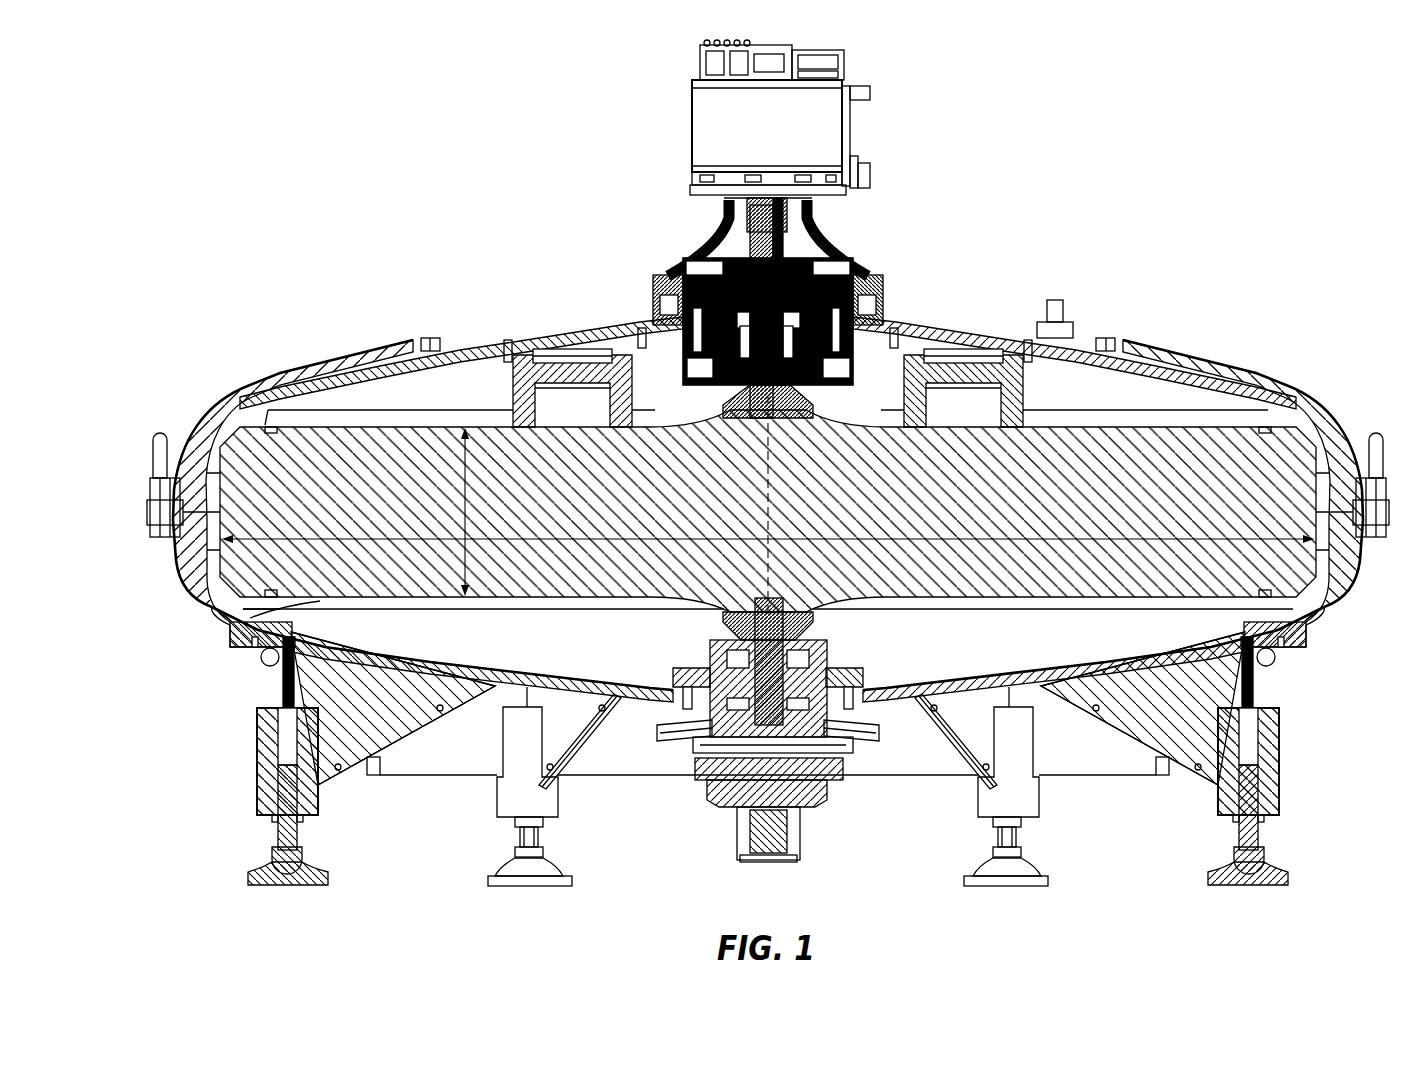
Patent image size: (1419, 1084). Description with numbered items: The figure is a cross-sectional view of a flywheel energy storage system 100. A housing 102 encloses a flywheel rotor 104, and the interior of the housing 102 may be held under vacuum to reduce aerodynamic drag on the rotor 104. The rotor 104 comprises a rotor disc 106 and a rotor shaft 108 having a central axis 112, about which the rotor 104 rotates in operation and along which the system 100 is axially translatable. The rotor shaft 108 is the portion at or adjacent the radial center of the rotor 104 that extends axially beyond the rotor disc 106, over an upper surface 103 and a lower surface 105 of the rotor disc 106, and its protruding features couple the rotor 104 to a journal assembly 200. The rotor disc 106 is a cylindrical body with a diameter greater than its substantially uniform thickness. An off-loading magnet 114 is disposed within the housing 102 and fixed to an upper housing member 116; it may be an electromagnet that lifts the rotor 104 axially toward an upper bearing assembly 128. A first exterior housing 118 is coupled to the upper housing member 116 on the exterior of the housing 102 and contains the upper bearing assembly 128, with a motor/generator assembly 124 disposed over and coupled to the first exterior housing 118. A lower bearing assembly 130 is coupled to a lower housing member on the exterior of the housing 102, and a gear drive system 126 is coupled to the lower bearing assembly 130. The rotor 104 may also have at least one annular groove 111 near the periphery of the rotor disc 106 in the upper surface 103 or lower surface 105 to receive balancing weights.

The flywheel energy storage system 100 is at (1145, 192).
The housing 102 is at (1343, 420).
The upper surface 103 is at (397, 425).
The flywheel rotor 104 is at (262, 665).
The lower surface 105 is at (232, 628).
The rotor disc 106 is at (1150, 437).
The rotor shaft 108 is at (710, 622).
The groove 111 is at (263, 415).
The central axis 112 is at (772, 493).
The off-loading magnet 114 is at (527, 343).
The upper housing member 116 is at (467, 337).
The first exterior housing 118 is at (843, 256).
The motor/generator assembly 124 is at (862, 132).
The gear drive system 126 is at (770, 862).
The upper bearing assembly 128 is at (683, 257).
The lower bearing assembly 130 is at (685, 748).
The journal assembly 200 is at (712, 398).